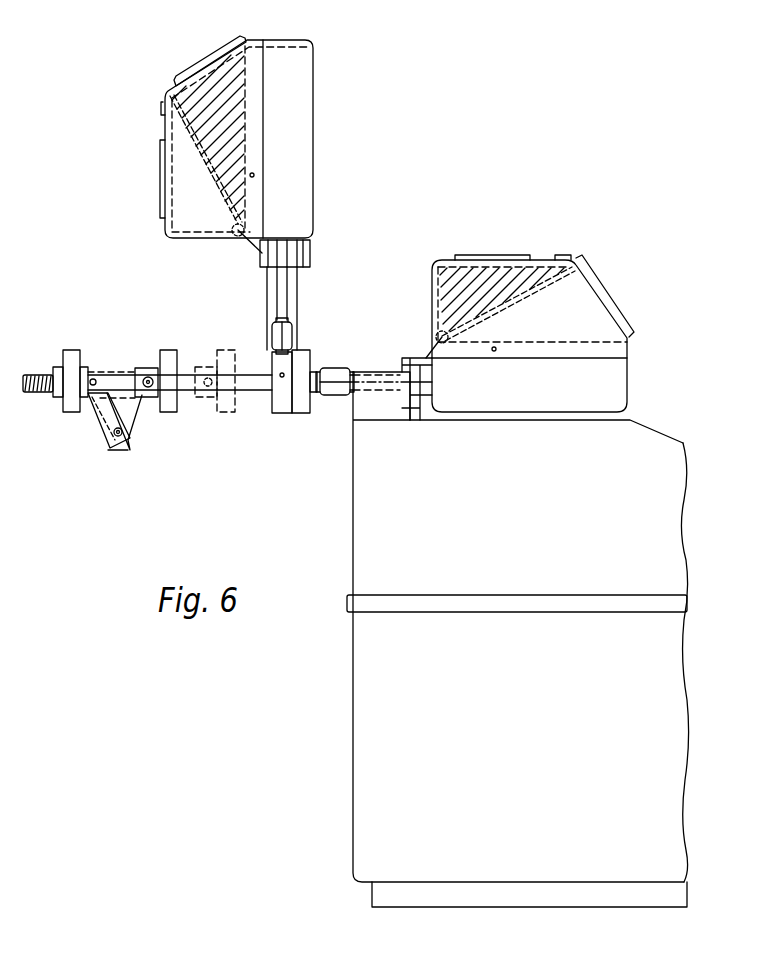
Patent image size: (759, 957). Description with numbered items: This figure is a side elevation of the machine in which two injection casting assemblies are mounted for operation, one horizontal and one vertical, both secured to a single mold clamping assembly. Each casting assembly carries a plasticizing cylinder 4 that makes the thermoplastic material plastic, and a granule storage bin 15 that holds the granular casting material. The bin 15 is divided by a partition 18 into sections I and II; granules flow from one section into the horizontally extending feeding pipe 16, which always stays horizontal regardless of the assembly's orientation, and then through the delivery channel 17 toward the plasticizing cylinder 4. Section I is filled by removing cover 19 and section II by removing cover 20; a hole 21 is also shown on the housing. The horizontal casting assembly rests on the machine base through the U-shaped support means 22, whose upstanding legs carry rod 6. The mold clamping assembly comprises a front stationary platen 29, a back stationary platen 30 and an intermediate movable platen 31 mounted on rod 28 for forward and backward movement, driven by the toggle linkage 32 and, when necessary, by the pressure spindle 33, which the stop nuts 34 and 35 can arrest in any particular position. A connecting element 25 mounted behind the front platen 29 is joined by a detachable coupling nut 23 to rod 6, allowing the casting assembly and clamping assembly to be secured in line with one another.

The plasticizing cylinder 4 is at (291, 304).
The rod 6 is at (284, 254).
The granule storage bin 15 is at (166, 92).
The feeding pipe 16 is at (234, 238).
The delivery channel 17 is at (260, 253).
The partition 18 is at (227, 199).
The cover 19 is at (160, 157).
The cover 20 is at (208, 58).
The hole 21 is at (254, 174).
The U-shaped support means 22 is at (383, 413).
The coupling nut 23 is at (290, 333).
The connecting element 25 is at (281, 386).
The rod 28 is at (249, 373).
The front stationary platen 29 is at (300, 406).
The back stationary platen 30 is at (78, 350).
The intermediate movable platen 31 is at (167, 350).
The toggle linkage 32 is at (104, 428).
The pressure spindle 33 is at (43, 393).
The stop nut 34 is at (57, 367).
The stop nut 35 is at (88, 368).